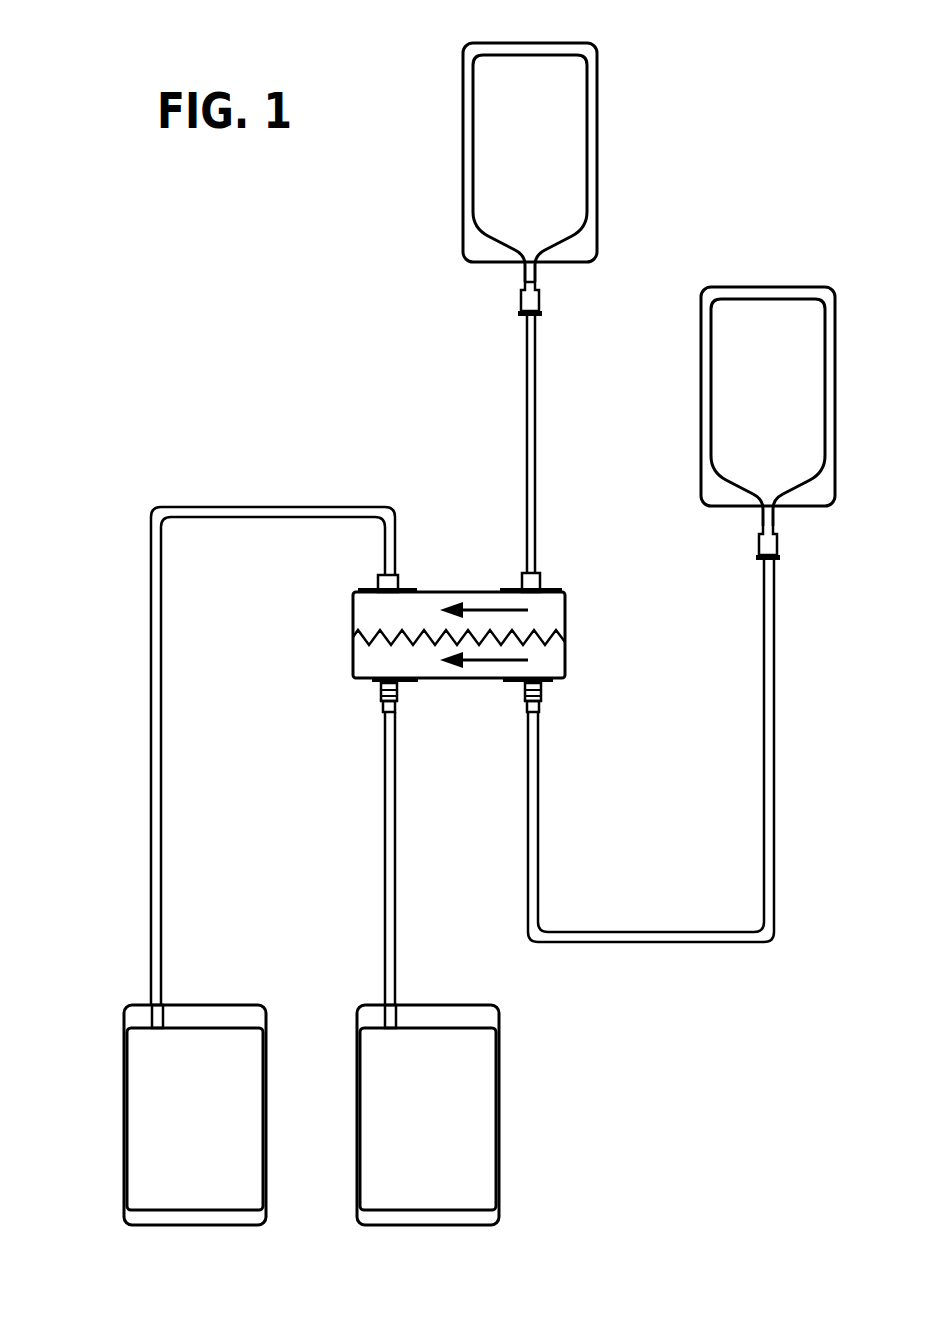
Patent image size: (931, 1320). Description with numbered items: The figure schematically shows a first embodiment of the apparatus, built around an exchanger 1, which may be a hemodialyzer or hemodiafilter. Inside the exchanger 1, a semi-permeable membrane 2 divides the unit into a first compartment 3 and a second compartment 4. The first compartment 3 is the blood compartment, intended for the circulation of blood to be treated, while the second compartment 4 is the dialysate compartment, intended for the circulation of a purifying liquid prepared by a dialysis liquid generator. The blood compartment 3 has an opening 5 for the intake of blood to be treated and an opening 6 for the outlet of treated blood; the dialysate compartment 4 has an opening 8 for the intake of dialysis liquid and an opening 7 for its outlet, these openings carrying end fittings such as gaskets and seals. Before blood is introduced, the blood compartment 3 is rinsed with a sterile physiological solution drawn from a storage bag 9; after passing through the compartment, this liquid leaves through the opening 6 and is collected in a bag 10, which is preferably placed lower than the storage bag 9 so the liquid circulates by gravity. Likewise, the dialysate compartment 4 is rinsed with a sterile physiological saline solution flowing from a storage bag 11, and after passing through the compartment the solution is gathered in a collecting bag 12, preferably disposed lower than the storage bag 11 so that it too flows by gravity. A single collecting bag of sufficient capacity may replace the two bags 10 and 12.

The exchanger 1 is at (443, 533).
The semi-permeable membrane 2 is at (540, 637).
The first compartment 3 is at (423, 608).
The second compartment 4 is at (432, 667).
The opening 5 is at (540, 580).
The opening 6 is at (378, 580).
The opening 7 is at (380, 710).
The opening 8 is at (542, 710).
The storage bag 9 is at (487, 192).
The bag 10 is at (136, 1100).
The storage bag 11 is at (722, 434).
The collecting bag 12 is at (370, 1100).